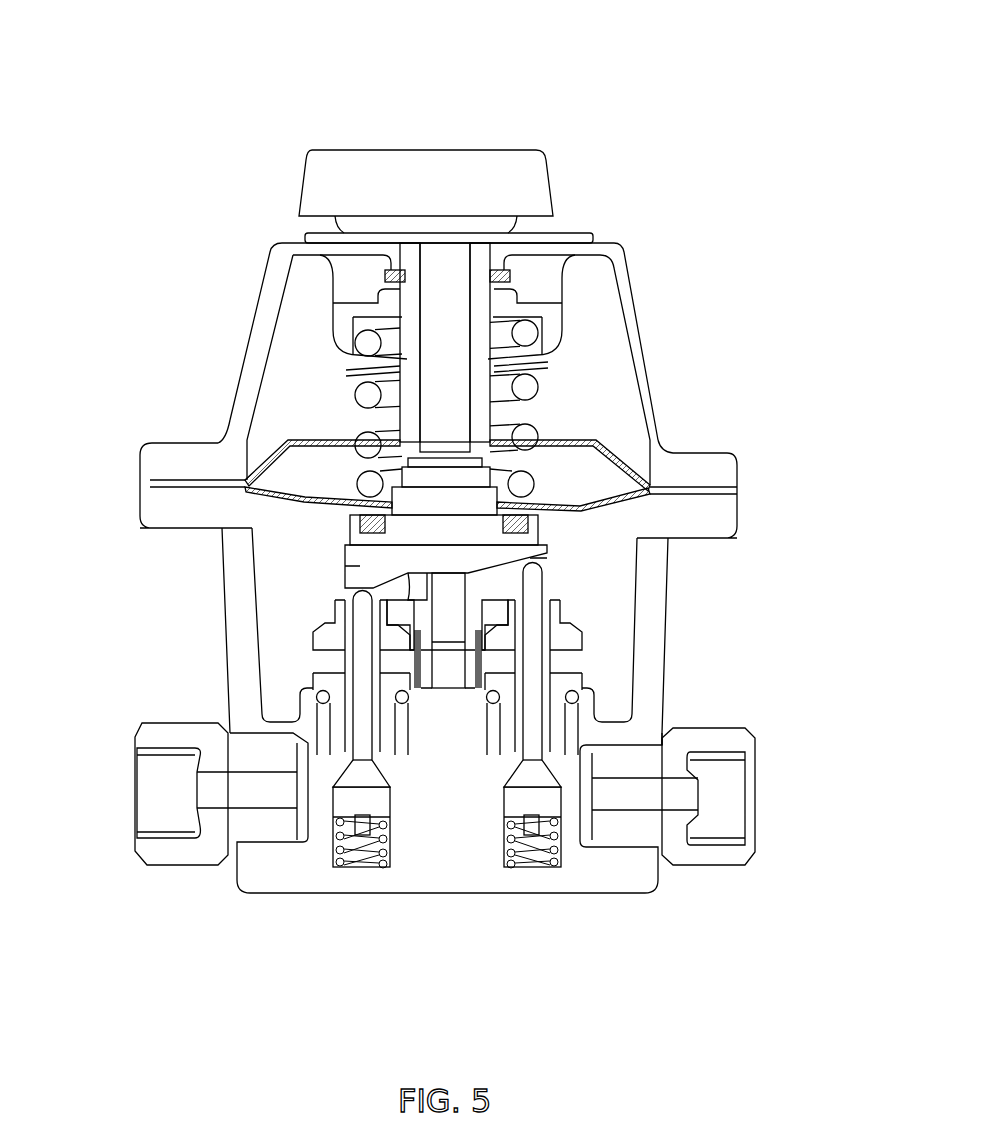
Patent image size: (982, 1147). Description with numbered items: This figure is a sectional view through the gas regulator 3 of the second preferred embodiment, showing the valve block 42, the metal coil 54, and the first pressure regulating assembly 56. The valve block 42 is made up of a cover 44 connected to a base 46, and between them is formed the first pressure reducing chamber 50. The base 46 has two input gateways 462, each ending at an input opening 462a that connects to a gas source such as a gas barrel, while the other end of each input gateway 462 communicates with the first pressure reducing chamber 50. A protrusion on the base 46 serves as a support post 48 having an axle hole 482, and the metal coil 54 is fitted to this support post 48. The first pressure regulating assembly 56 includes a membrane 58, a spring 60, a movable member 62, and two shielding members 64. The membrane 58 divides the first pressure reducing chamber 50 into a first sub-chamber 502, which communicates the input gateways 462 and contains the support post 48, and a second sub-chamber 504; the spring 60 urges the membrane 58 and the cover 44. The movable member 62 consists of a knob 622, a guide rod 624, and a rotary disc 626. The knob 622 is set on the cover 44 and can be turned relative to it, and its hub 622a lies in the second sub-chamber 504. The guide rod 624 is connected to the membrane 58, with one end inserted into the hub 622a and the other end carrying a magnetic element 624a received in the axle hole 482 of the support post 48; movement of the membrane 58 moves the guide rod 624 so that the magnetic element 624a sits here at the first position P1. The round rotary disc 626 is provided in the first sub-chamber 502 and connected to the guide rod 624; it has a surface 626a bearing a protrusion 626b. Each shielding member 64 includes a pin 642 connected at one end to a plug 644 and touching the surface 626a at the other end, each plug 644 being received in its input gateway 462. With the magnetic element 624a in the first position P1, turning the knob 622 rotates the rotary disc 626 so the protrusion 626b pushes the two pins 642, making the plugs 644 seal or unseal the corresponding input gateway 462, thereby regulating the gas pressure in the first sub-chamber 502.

The gas regulator 3 is at (774, 20).
The valve block 42 is at (135, 362).
The cover 44 is at (232, 418).
The base 46 is at (137, 510).
The support post 48 is at (470, 670).
The axle hole 482 is at (440, 677).
The input gateway 462 is at (313, 793).
The input opening 462a is at (138, 797).
The first pressure reducing chamber 50 is at (789, 330).
The first sub-chamber 502 is at (623, 520).
The second sub-chamber 504 is at (590, 460).
The metal coil 54 is at (490, 613).
The first pressure regulating assembly 56 is at (548, 371).
The membrane 58 is at (273, 490).
The spring 60 is at (353, 395).
The movable member 62 is at (327, 536).
The knob 622 is at (478, 186).
The hub 622a is at (413, 260).
The guide rod 624 is at (457, 412).
The magnetic element 624a is at (448, 594).
The rotary disc 626 is at (463, 559).
The surface 626a is at (408, 590).
The protrusion 626b is at (358, 565).
The shielding member 64 is at (762, 608).
The pin 642 is at (535, 618).
The plug 644 is at (543, 760).
The first position P1 is at (451, 650).